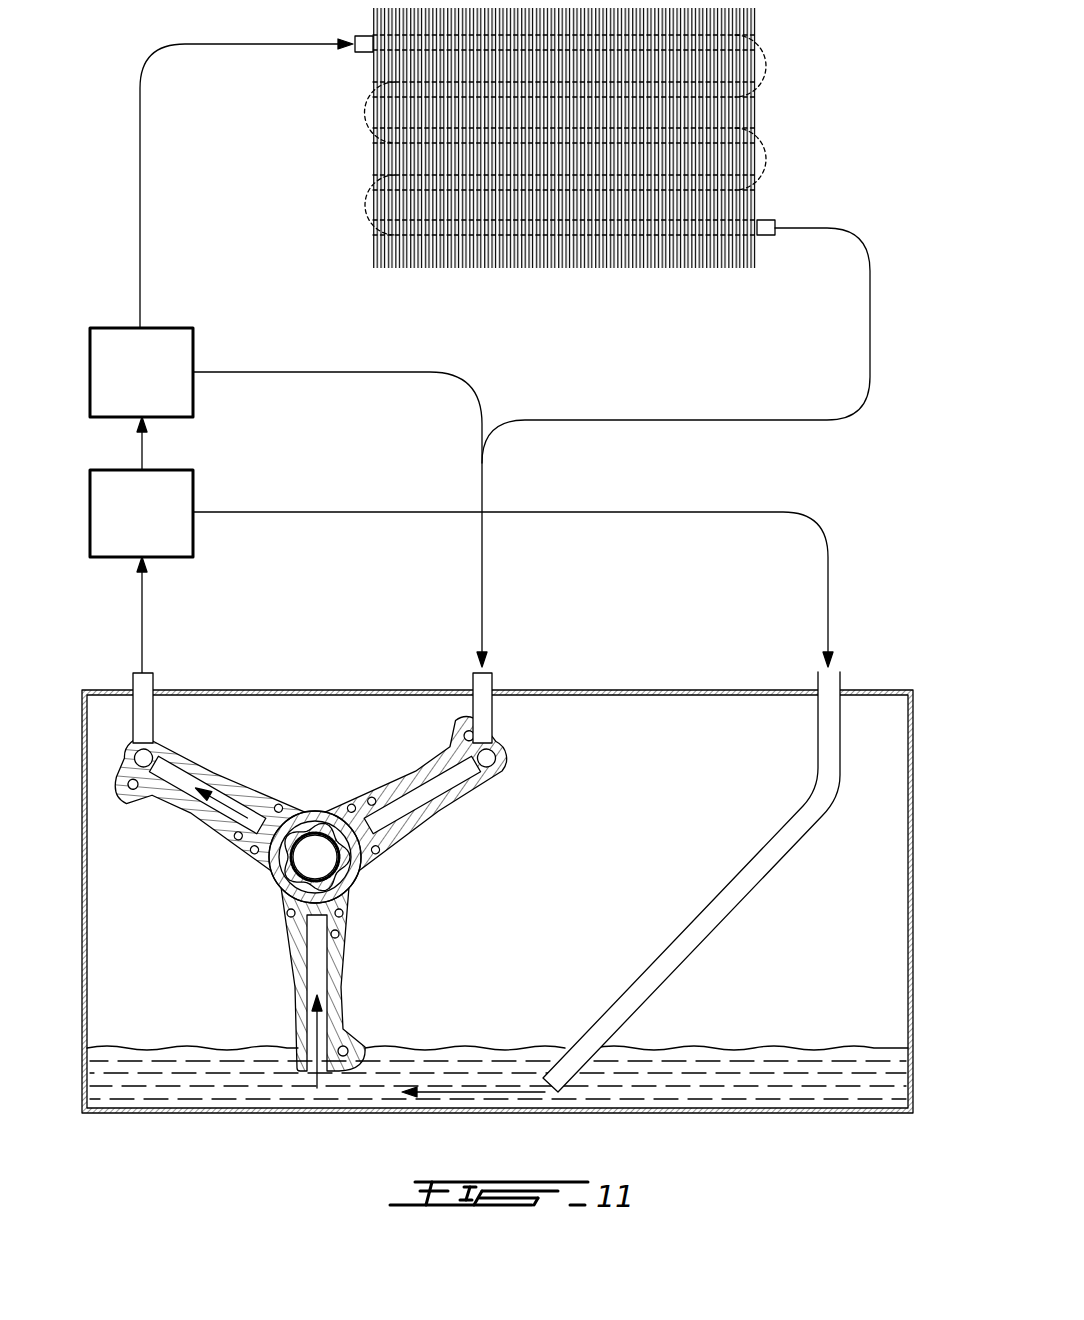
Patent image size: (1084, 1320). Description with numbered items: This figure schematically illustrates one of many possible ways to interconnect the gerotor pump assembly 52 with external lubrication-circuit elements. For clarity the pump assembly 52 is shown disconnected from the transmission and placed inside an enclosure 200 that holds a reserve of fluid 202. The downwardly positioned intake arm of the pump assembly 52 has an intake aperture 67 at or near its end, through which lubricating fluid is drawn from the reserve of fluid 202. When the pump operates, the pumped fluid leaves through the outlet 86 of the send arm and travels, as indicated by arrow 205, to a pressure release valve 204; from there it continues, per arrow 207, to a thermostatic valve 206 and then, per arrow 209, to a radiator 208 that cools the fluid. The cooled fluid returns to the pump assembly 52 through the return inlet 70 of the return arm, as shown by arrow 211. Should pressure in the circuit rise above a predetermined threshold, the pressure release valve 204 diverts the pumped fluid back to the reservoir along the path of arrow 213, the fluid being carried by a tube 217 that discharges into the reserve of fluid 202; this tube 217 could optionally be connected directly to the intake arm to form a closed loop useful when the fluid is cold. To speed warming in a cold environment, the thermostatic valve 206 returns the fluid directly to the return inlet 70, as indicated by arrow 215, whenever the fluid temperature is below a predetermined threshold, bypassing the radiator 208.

The pump assembly 52 is at (425, 876).
The intake aperture 67 is at (312, 1068).
The return inlet 70 is at (486, 757).
The outlet 86 is at (146, 757).
The enclosure 200 is at (912, 712).
The reserve of fluid 202 is at (828, 1077).
The pressure release valve 204 is at (170, 533).
The arrow 205 is at (143, 617).
The thermostatic valve 206 is at (180, 343).
The arrow 207 is at (143, 450).
The radiator 208 is at (760, 96).
The arrow 209 is at (140, 152).
The arrow 211 is at (843, 418).
The arrow 213 is at (828, 597).
The arrow 215 is at (470, 383).
The tube 217 is at (722, 908).